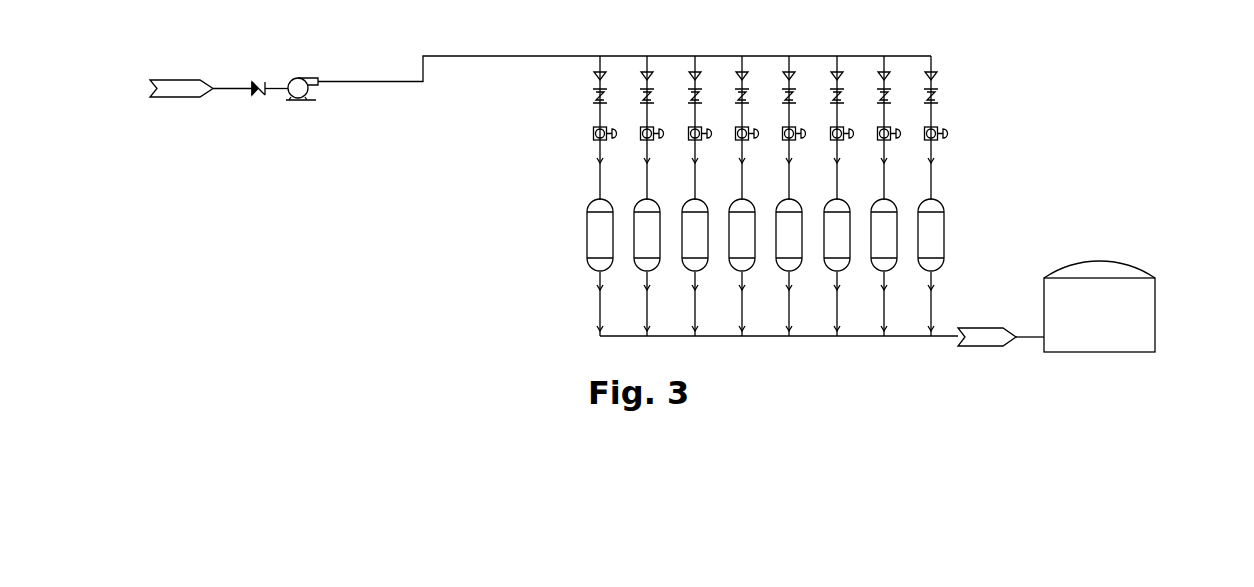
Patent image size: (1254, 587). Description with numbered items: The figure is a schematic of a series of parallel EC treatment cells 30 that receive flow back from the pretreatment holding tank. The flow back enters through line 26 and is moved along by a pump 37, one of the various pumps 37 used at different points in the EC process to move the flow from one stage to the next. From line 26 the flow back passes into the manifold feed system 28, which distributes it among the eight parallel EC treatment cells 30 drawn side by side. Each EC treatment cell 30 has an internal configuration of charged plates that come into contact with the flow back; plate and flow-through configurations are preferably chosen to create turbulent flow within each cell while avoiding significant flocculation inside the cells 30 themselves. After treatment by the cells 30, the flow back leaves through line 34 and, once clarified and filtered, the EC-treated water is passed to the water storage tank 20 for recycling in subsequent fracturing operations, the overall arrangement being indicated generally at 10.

The water treatment system 10 is at (1001, 106).
The storage tank 20 is at (1116, 272).
The line 26 is at (187, 87).
The manifold feed system 28 is at (582, 136).
The EC treatment cells 30 is at (950, 221).
The line 34 is at (1002, 327).
The pumps 37 is at (307, 76).